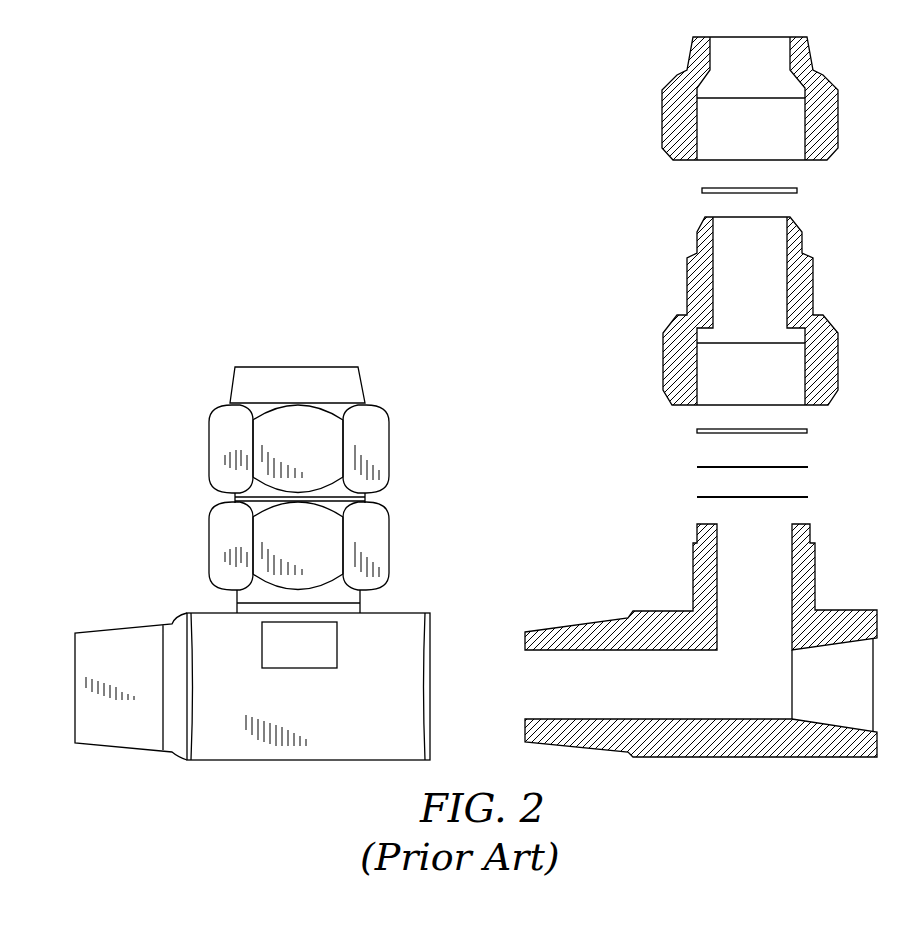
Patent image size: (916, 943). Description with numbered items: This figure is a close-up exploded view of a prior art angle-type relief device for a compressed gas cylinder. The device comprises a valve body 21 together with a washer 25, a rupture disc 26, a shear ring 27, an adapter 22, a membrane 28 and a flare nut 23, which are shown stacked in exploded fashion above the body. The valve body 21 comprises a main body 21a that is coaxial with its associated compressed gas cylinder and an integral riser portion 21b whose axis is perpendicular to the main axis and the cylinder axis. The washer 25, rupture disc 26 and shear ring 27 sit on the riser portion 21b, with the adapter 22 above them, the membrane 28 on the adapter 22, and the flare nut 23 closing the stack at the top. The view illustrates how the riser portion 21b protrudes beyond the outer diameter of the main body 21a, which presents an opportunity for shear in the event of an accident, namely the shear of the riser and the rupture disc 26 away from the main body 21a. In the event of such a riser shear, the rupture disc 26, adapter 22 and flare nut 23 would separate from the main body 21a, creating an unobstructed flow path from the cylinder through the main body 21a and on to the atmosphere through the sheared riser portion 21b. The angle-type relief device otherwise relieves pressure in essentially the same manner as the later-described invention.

The valve body 21 is at (704, 659).
The main body 21a is at (695, 758).
The riser portion 21b is at (815, 578).
The adapter 22 is at (687, 290).
The flare nut 23 is at (662, 117).
The washer 25 is at (808, 497).
The rupture disc 26 is at (808, 467).
The shear ring 27 is at (808, 431).
The membrane 28 is at (798, 191).